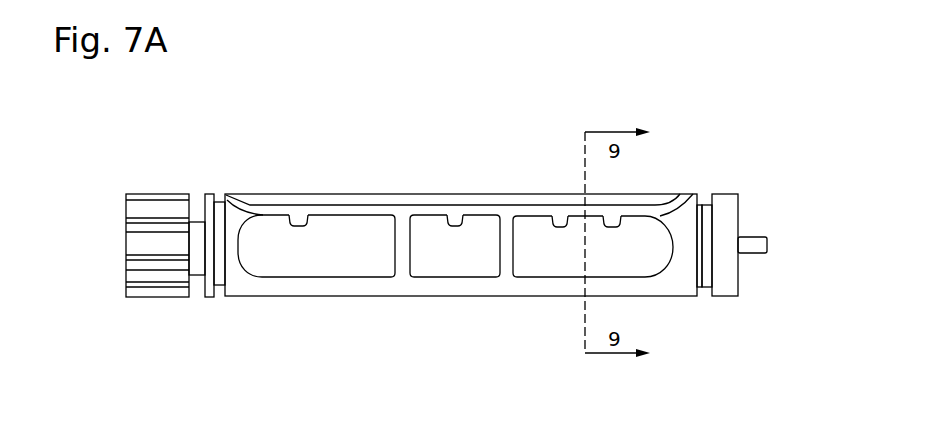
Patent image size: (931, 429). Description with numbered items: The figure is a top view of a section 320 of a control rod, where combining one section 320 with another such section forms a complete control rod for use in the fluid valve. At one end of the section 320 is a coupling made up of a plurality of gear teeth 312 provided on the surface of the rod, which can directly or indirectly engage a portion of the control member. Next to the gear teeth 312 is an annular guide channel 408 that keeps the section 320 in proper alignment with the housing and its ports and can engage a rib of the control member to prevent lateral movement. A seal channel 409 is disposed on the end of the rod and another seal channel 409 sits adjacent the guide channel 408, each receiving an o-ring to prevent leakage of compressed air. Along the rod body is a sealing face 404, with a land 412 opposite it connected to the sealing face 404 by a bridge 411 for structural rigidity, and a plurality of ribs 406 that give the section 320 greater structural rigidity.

The section of a control rod 320 is at (668, 86).
The gear teeth 312 is at (160, 297).
The annular guide channel 408 is at (195, 220).
The seal channel 409 is at (220, 197).
The sealing face 404 is at (463, 145).
The bridge 411 is at (505, 230).
The ribs 406 is at (553, 228).
The land 412 is at (307, 285).